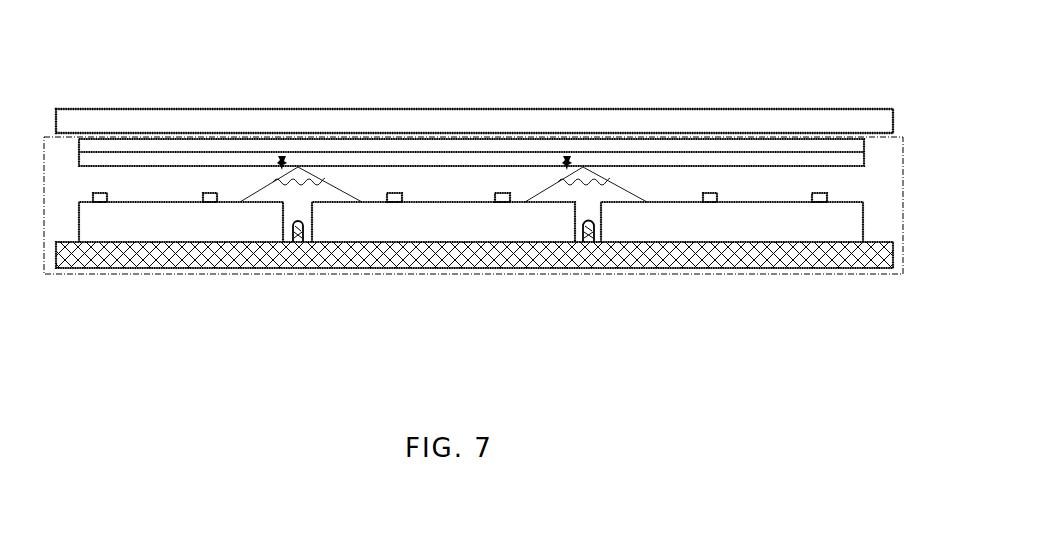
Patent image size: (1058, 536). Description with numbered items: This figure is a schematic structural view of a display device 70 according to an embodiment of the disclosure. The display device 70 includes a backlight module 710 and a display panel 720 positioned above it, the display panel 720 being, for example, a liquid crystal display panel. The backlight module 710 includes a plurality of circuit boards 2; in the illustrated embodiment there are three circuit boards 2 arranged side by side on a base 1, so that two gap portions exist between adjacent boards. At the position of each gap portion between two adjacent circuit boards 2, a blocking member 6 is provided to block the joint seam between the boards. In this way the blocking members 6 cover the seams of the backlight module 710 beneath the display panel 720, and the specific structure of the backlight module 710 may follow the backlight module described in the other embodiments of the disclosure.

The substrate 1 is at (884, 270).
The circuit board 2 is at (183, 222).
The blocking member 6 is at (282, 156).
The display device 70 is at (473, 164).
The backlight module 710 is at (876, 166).
The display panel 720 is at (892, 108).